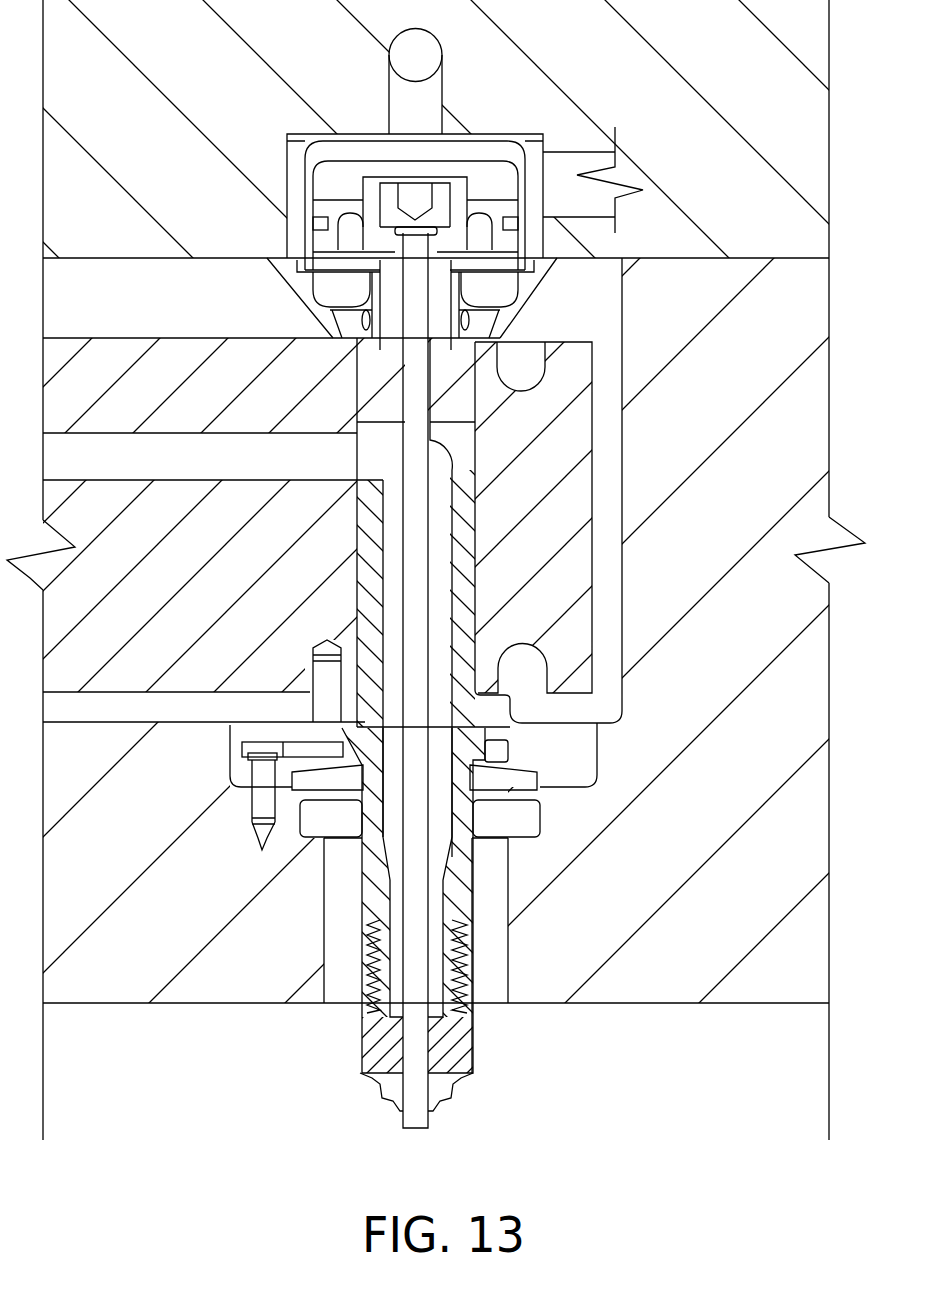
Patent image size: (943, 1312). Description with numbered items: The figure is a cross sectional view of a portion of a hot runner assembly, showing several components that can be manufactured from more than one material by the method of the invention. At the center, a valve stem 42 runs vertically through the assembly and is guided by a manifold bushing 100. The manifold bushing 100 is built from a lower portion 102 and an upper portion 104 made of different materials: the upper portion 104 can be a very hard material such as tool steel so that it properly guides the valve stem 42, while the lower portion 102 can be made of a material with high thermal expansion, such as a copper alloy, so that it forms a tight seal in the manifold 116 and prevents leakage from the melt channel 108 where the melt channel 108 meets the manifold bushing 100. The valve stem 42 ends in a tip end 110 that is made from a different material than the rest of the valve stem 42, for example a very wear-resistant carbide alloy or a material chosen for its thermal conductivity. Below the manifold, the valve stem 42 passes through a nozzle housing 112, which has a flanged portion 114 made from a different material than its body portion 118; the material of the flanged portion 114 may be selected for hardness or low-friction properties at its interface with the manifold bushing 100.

The valve stem 42 is at (403, 381).
The manifold bushing 100 is at (357, 527).
The lower portion 102 is at (477, 581).
The upper portion 104 is at (473, 393).
The melt channel 108 is at (247, 462).
The tip end 110 is at (428, 1125).
The nozzle housing 112 is at (477, 903).
The flanged portion 114 is at (493, 735).
The manifold 116 is at (113, 338).
The body portion 118 is at (360, 860).